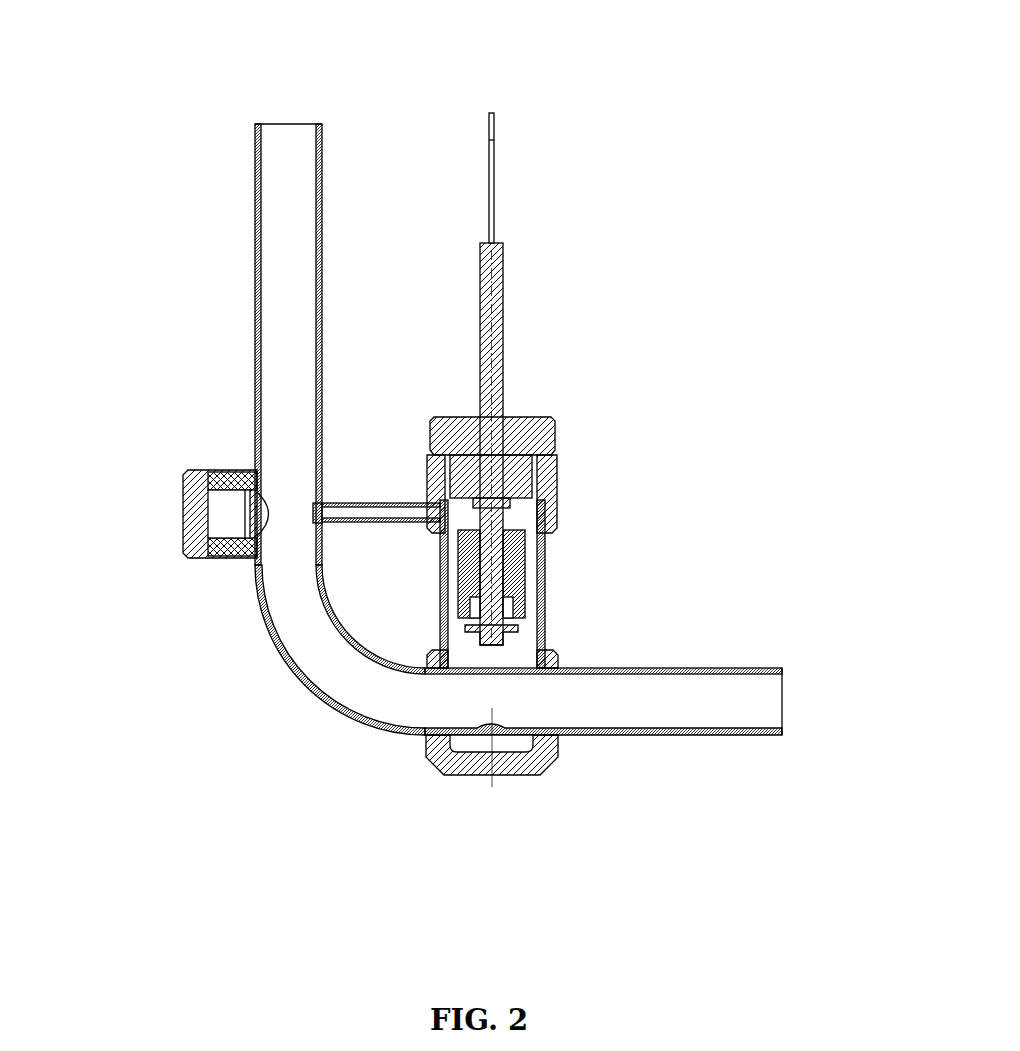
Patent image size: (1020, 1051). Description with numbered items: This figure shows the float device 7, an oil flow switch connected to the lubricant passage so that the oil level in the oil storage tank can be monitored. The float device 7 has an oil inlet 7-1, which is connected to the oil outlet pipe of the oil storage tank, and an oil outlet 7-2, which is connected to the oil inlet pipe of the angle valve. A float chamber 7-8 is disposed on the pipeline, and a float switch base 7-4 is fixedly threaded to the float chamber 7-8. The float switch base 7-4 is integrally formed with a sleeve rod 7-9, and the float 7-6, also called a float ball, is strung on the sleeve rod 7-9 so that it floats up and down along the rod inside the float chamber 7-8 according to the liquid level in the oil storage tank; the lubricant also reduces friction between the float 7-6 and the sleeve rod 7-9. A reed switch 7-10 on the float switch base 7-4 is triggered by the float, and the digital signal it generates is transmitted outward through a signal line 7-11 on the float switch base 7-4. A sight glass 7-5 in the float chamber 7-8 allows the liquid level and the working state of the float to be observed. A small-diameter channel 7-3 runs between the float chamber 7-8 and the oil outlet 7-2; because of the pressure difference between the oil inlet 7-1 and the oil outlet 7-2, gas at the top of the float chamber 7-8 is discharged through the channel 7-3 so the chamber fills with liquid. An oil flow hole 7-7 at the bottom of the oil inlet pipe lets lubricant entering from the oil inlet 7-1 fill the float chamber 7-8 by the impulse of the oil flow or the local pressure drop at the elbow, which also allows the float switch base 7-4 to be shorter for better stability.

The float device 7 is at (708, 114).
The oil inlet 7-1 is at (678, 670).
The oil outlet 7-2 is at (251, 374).
The channel 7-3 is at (386, 410).
The float switch base 7-4 is at (568, 439).
The sight glass 7-5 is at (138, 478).
The float 7-6 is at (598, 584).
The oil flow hole 7-7 is at (541, 780).
The float chamber 7-8 is at (548, 630).
The sleeve rod 7-9 is at (462, 582).
The reed switch 7-10 is at (510, 477).
The signal line 7-11 is at (510, 213).